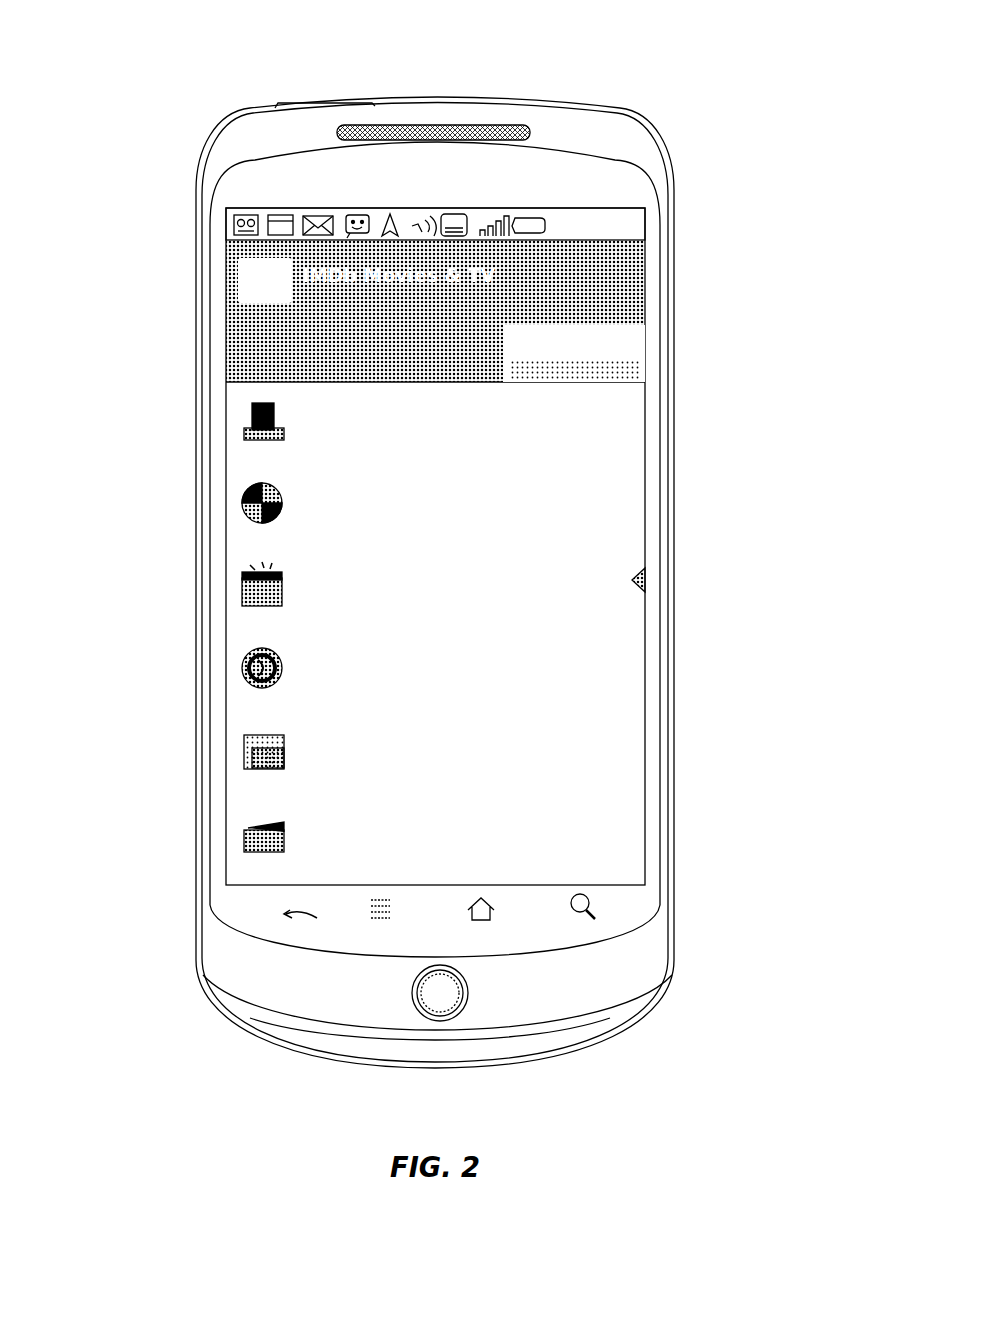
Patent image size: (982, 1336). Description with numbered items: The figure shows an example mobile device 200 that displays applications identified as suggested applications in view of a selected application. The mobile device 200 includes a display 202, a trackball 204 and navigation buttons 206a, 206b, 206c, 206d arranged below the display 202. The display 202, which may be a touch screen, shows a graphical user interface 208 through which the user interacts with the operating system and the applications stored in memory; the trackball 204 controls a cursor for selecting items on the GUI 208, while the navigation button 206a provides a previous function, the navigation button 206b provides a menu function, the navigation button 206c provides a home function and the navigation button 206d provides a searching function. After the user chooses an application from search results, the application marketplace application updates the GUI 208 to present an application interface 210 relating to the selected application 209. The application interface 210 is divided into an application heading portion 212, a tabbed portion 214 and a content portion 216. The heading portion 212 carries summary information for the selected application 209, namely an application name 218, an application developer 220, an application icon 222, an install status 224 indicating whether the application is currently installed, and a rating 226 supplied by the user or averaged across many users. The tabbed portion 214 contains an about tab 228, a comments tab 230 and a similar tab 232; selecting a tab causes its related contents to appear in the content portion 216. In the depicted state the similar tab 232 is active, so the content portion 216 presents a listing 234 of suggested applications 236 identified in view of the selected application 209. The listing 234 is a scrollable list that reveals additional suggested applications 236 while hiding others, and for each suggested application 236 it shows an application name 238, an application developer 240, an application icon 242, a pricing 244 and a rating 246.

The mobile device 200 is at (142, 104).
The display 202 is at (436, 633).
The trackball 204 is at (440, 988).
The navigation button 206a is at (300, 933).
The navigation button 206b is at (380, 932).
The navigation button 206c is at (500, 930).
The navigation button 206d is at (612, 912).
The graphical user interface 208 is at (645, 625).
The selected application 209 is at (225, 287).
The application interface 210 is at (444, 146).
The application heading portion 212 is at (647, 237).
The tabbed portion 214 is at (647, 332).
The content portion 216 is at (645, 495).
The application name 218 is at (357, 243).
The application developer 220 is at (292, 305).
The application icon 222 is at (263, 248).
The install status 224 is at (573, 252).
The rating 226 is at (628, 288).
The about tab 228 is at (225, 357).
The comments tab 230 is at (357, 357).
The similar tab 232 is at (436, 359).
The listing 234 is at (227, 630).
The suggested applications 236 is at (227, 737).
The application name 238 is at (297, 812).
The application developer 240 is at (297, 853).
The application icon 242 is at (227, 827).
The pricing 244 is at (630, 802).
The rating 246 is at (630, 835).